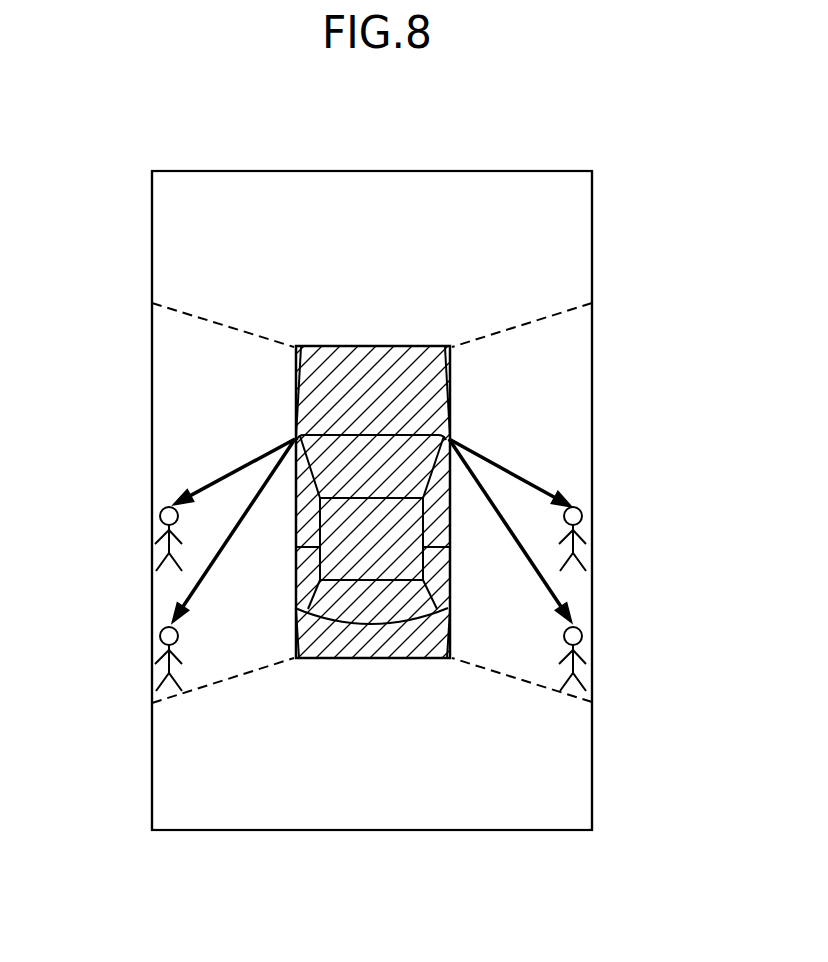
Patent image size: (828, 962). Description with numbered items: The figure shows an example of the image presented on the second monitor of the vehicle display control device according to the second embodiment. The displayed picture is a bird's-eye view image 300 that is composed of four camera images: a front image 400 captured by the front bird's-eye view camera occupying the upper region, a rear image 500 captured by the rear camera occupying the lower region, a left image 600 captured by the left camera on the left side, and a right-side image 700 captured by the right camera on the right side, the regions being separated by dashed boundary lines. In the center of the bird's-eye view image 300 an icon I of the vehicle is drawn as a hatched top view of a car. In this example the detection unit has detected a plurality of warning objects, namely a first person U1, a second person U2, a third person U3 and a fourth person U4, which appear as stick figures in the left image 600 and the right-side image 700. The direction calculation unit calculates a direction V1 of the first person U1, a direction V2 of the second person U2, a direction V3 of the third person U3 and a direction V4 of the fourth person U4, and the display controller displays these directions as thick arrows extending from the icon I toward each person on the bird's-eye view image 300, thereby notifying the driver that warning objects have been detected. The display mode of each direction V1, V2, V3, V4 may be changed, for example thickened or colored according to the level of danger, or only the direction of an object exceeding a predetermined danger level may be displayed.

The bird's-eye view image 300 is at (370, 171).
The front image 400 is at (482, 197).
The rear image 500 is at (482, 805).
The left image 600 is at (177, 428).
The right-side image 700 is at (565, 428).
The icon I is at (371, 565).
The direction V1 is at (213, 480).
The direction V2 is at (195, 585).
The direction V3 is at (528, 480).
The direction V4 is at (550, 585).
The first person U1 is at (160, 517).
The second person U2 is at (160, 637).
The third person U3 is at (583, 517).
The fourth person U4 is at (583, 637).